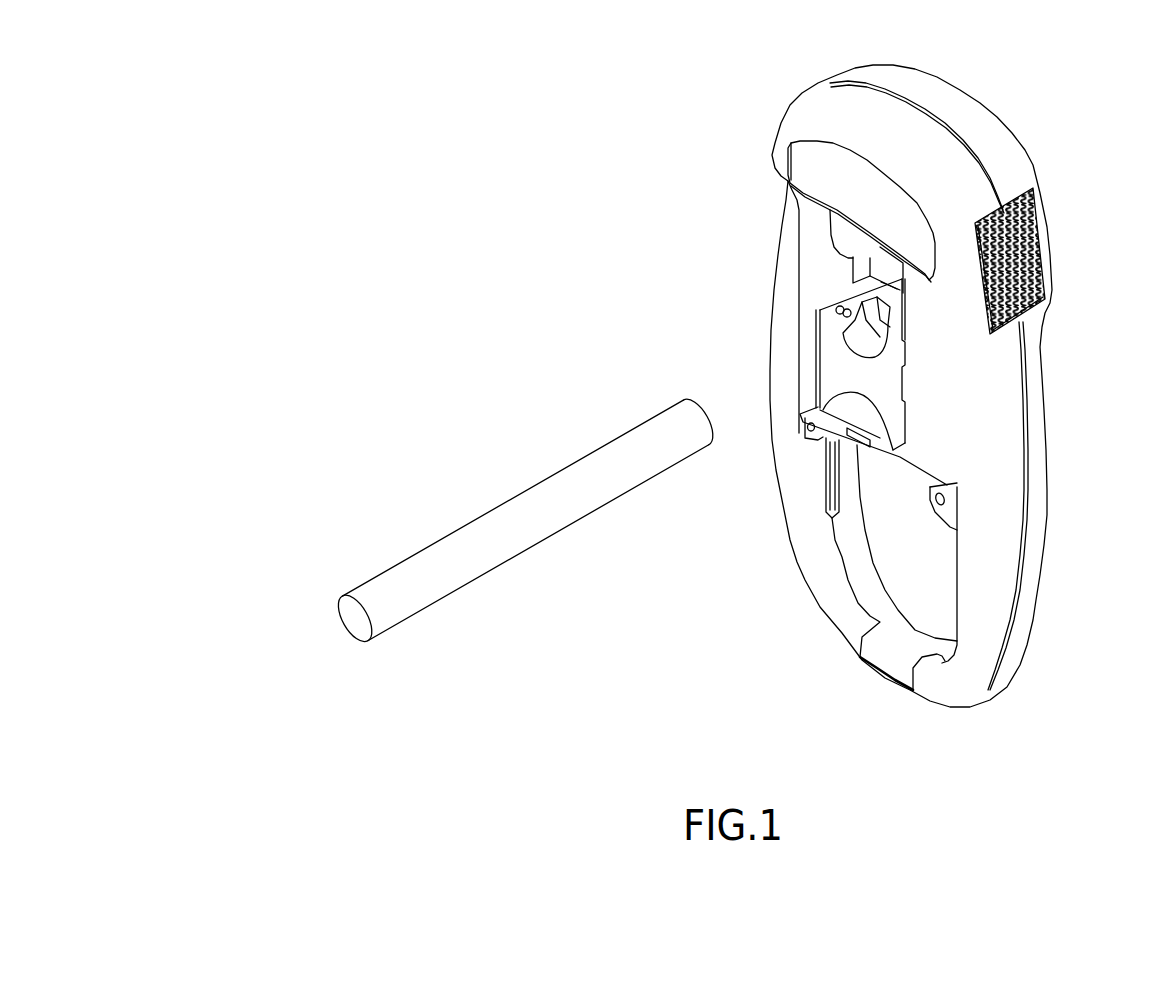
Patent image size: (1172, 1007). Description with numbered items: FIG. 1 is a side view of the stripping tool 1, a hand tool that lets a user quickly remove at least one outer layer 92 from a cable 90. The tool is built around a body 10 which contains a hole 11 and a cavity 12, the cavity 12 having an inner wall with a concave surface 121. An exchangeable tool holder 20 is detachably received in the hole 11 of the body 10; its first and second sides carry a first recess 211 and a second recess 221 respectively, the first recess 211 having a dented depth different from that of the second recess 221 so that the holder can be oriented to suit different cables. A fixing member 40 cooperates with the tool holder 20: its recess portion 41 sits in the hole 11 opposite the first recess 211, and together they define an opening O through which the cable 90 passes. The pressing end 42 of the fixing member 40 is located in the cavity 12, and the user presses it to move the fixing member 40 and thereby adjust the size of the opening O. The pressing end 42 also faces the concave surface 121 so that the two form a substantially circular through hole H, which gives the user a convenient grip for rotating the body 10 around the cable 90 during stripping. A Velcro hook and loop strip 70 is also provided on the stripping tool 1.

The stripping tool 1 is at (590, 170).
The body 10 is at (1040, 462).
The hole 11 is at (800, 296).
The cavity 12 is at (813, 611).
The concave surface 121 is at (897, 643).
The exchangeable tool holder 20 is at (807, 400).
The first recess 211 is at (858, 334).
The second recess 221 is at (860, 427).
The fixing member 40 is at (842, 243).
The recess portion 41 is at (842, 265).
The pressing end 42 is at (943, 507).
The Velcro hook and loop strip 70 is at (1043, 257).
The cable 90 is at (470, 523).
The outer layer 92 is at (460, 526).
The through hole H is at (840, 556).
The opening O is at (912, 320).